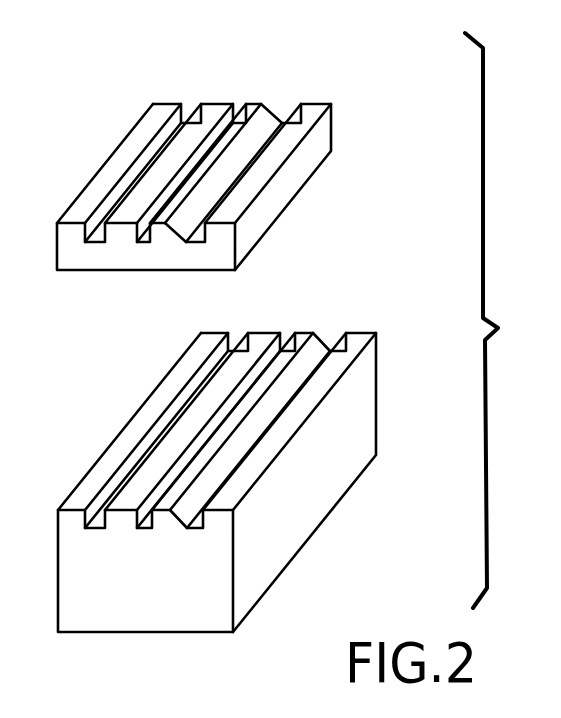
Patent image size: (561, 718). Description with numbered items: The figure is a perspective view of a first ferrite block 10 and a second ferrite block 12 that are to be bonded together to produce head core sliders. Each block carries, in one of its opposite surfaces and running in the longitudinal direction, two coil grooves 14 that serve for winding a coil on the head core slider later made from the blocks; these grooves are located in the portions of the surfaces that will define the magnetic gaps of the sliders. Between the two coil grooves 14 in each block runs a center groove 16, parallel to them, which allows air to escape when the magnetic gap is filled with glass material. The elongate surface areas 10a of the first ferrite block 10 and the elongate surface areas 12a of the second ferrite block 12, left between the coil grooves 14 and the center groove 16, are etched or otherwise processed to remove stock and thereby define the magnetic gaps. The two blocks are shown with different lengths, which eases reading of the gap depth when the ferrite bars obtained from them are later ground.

The first ferrite block 10 is at (360, 420).
The elongate surface areas 10a is at (135, 506).
The second ferrite block 12 is at (318, 138).
The elongate surface areas 12a is at (123, 221).
The coil groove 14 is at (194, 92).
The center groove 16 is at (250, 90).